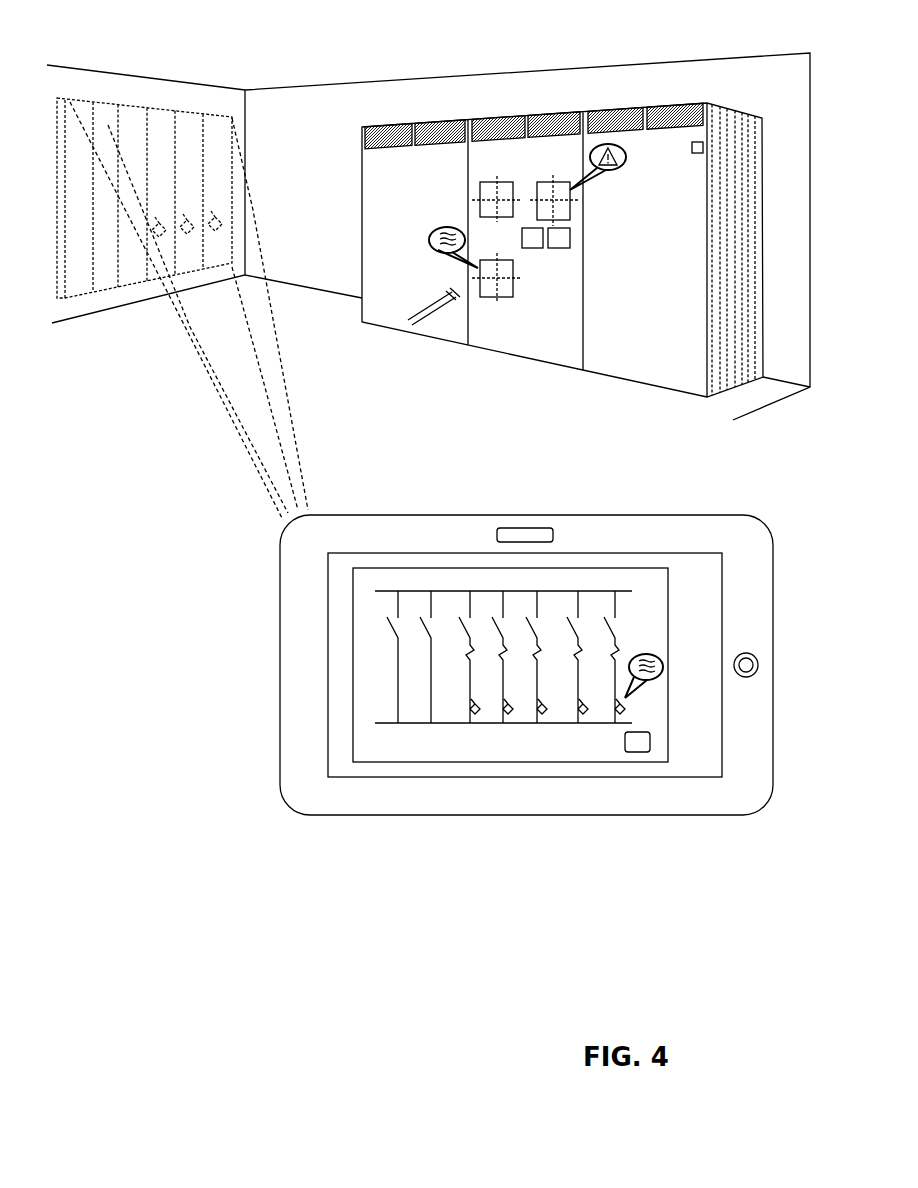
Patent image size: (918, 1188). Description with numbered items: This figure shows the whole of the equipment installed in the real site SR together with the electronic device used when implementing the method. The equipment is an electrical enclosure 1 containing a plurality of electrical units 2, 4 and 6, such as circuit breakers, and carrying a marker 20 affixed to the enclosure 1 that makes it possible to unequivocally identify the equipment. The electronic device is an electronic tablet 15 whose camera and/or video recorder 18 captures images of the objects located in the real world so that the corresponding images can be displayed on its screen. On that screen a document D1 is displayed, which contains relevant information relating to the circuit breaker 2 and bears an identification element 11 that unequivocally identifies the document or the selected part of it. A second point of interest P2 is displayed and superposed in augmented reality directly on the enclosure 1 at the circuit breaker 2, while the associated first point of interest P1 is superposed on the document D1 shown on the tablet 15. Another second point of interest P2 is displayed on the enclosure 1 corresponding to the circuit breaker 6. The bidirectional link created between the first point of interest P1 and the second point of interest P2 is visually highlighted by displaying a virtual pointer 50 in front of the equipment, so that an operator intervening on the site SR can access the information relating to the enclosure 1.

The electrical enclosure 1 is at (742, 103).
The electrical unit 2 is at (513, 282).
The electrical unit 4 is at (480, 198).
The electrical unit 6 is at (549, 182).
The marker 20 is at (703, 147).
The virtual pointer 50 is at (437, 313).
The real site SR is at (277, 131).
The second point of interest P2 is at (431, 246).
The electronic tablet 15 is at (275, 630).
The camera and/or video recorder 18 is at (523, 535).
The document D1 is at (677, 613).
The first point of interest P1 is at (655, 656).
The identification element 11 is at (643, 742).